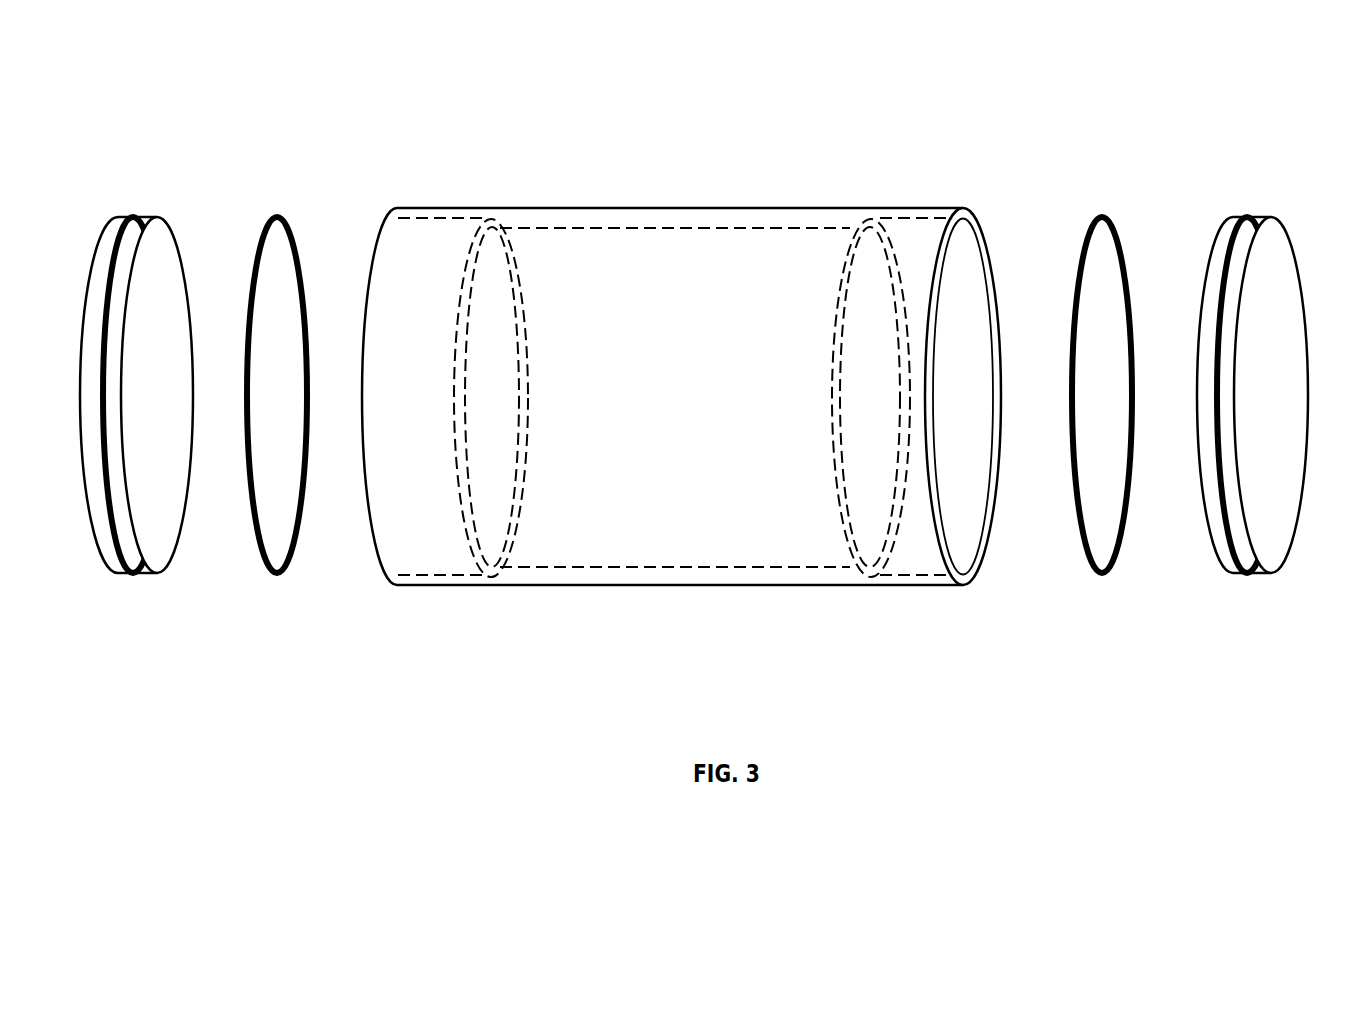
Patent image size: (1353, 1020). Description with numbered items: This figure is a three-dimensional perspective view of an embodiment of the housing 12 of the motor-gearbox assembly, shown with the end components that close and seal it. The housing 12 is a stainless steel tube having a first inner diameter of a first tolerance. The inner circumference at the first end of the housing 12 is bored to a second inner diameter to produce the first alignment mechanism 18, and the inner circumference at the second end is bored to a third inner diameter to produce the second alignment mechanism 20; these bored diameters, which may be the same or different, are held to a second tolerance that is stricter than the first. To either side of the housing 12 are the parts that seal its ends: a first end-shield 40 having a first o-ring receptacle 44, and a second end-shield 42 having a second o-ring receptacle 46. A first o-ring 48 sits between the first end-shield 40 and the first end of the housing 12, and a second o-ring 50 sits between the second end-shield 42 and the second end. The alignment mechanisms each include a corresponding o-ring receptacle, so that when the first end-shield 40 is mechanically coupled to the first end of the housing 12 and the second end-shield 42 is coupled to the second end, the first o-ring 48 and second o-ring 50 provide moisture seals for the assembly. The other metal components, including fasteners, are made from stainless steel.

The housing 12 is at (681, 421).
The first alignment mechanism 18 is at (925, 208).
The second alignment mechanism 20 is at (436, 208).
The first end-shield 40 is at (1267, 378).
The second end-shield 42 is at (125, 376).
The first o-ring receptacle 44 is at (1253, 206).
The second o-ring receptacle 46 is at (135, 206).
The first o-ring 48 is at (1102, 587).
The second o-ring 50 is at (277, 587).